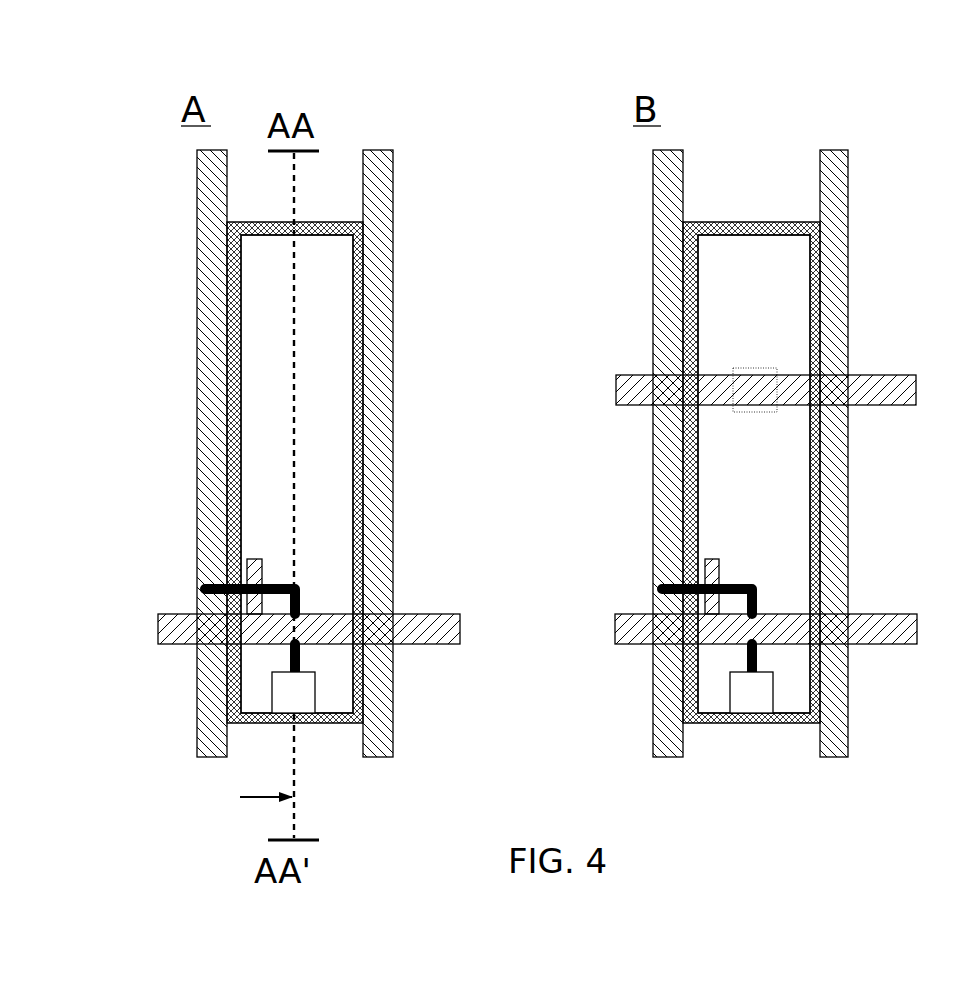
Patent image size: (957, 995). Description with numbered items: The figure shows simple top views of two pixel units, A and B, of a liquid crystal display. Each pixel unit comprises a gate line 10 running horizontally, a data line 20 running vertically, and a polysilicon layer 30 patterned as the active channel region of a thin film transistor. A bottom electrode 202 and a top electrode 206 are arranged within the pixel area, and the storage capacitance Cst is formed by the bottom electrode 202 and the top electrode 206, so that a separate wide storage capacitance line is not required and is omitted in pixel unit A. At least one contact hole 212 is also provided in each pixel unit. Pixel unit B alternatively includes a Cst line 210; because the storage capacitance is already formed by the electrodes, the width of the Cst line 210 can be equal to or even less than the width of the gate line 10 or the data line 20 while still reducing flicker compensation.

The gate line 10 is at (413, 612).
The data line 20 is at (197, 283).
The polysilicon layer 30 is at (278, 578).
The bottom electrode 202 is at (321, 222).
The top electrode 206 is at (327, 455).
The Cst line 210 is at (890, 373).
The contact hole 212 is at (735, 408).